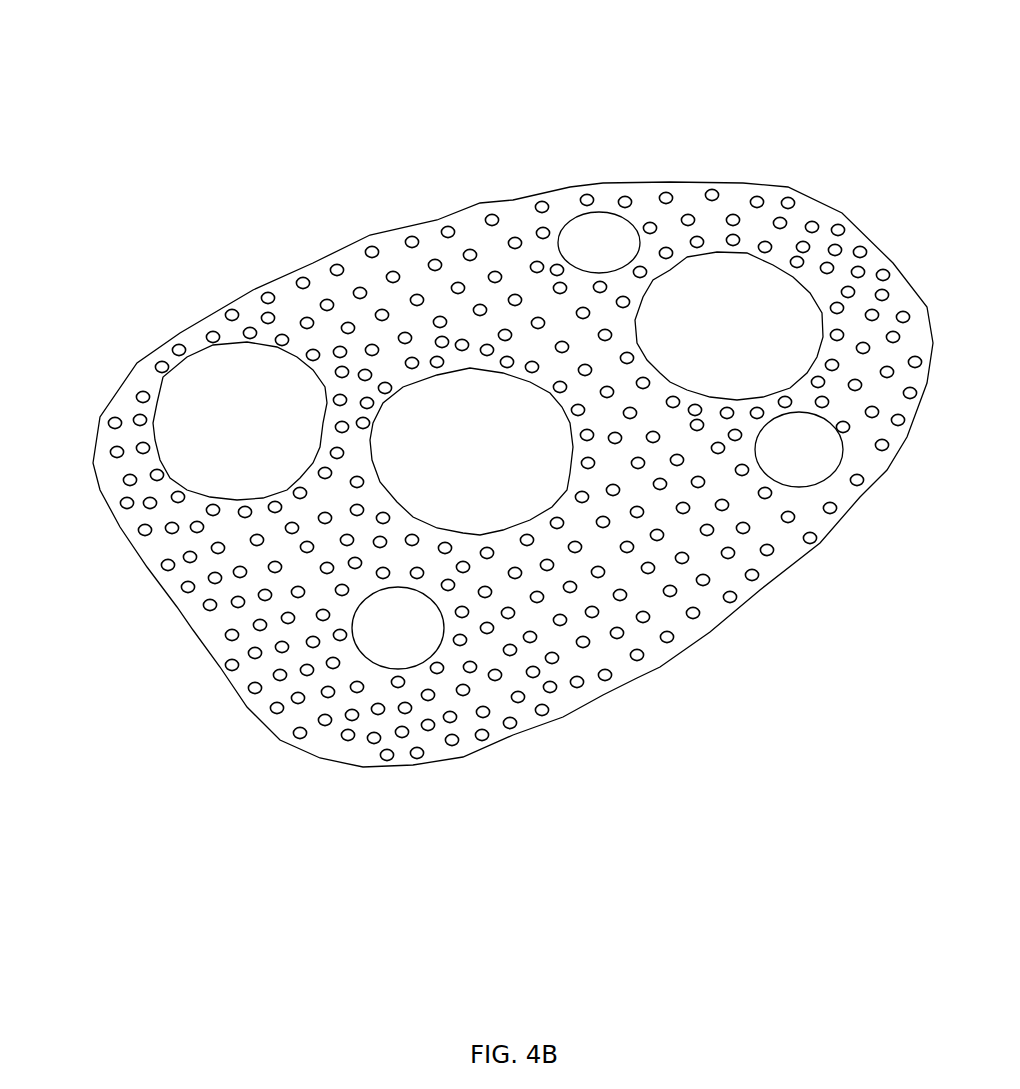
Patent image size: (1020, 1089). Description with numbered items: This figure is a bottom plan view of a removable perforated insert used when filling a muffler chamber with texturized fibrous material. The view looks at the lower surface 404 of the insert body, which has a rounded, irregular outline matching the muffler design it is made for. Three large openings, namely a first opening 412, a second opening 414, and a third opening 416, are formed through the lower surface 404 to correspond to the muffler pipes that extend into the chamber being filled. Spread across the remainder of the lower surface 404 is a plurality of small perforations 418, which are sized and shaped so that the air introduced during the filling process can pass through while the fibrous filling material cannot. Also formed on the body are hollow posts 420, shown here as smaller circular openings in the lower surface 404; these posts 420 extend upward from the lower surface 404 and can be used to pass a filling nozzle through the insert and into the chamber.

The lower surface 404 is at (333, 742).
The first opening 412 is at (220, 405).
The second opening 414 is at (457, 413).
The third opening 416 is at (741, 282).
The perforations 418 is at (542, 207).
The posts 420 is at (598, 235).